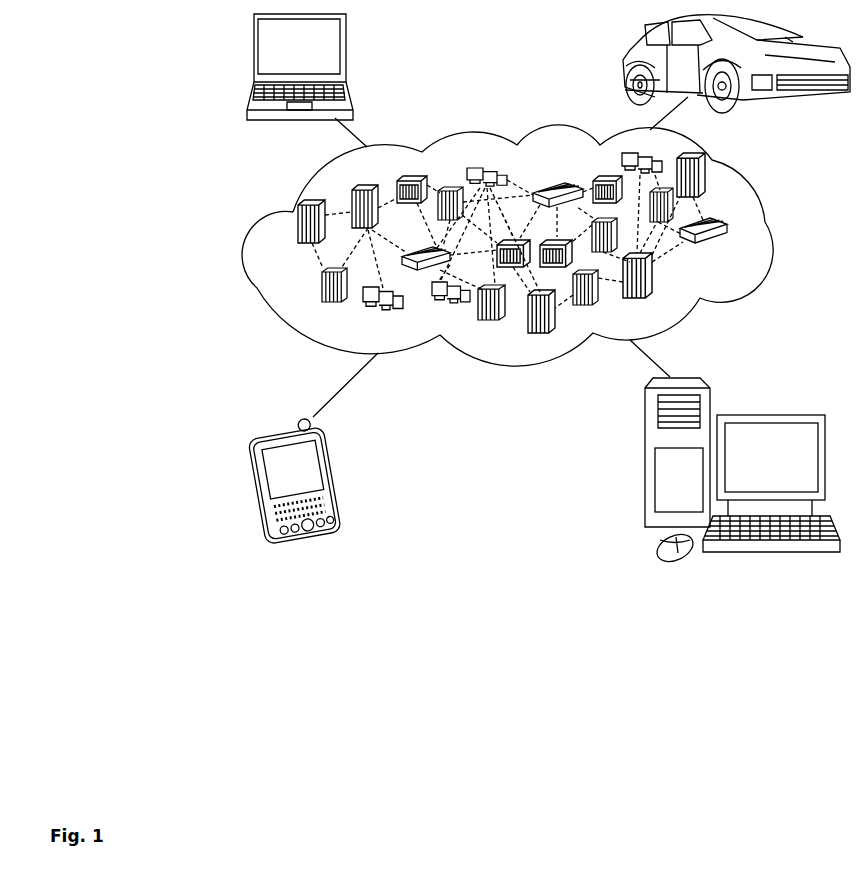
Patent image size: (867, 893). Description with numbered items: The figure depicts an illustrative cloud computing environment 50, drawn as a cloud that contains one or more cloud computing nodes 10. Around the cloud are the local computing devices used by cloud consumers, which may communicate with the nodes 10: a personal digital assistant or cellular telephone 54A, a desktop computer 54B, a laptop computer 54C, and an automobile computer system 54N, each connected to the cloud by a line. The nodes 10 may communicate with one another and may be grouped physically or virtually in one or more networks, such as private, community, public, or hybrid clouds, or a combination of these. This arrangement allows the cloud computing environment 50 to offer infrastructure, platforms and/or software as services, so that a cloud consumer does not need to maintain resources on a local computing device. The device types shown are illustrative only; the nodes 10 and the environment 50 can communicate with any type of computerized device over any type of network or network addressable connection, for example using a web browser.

The cloud computing node 10 is at (730, 250).
The cloud computing environment 50 is at (768, 228).
The personal digital assistant or cellular telephone 54A is at (337, 477).
The desktop computer 54B is at (767, 412).
The laptop computer 54C is at (346, 53).
The automobile computer system 54N is at (628, 62).